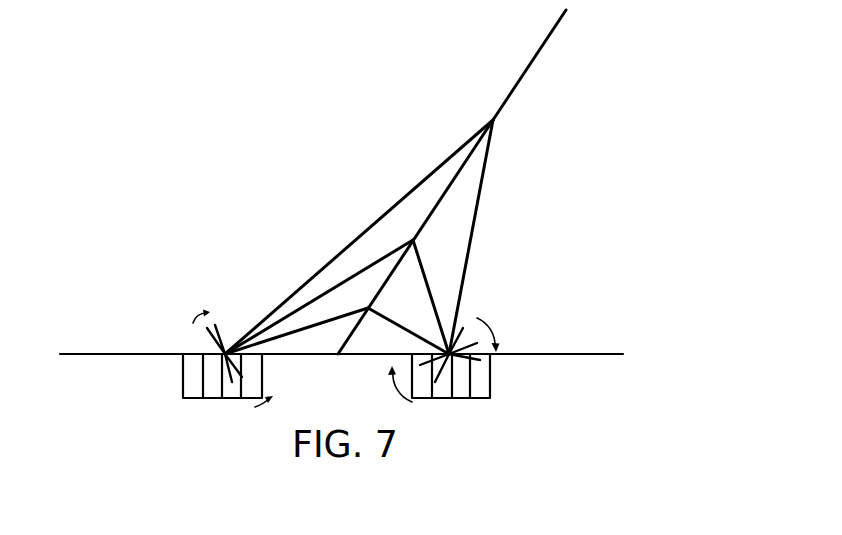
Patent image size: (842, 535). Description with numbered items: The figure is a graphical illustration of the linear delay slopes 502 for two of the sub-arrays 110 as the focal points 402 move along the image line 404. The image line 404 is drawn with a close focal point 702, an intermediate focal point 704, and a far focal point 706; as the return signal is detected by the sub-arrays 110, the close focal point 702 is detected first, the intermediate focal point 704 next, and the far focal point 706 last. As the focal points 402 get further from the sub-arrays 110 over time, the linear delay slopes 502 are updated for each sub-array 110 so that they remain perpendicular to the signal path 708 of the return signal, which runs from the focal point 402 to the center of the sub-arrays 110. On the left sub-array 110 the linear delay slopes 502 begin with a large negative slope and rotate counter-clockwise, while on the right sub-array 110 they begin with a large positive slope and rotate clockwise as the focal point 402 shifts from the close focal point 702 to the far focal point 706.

The sub-array 110 is at (161, 383).
The focal point 402 is at (507, 115).
The image line 404 is at (524, 75).
The linear delay slope 502 is at (191, 337).
The close focal point 702 is at (368, 308).
The intermediate focal point 704 is at (413, 240).
The far focal point 706 is at (493, 120).
The signal path 708 is at (477, 218).